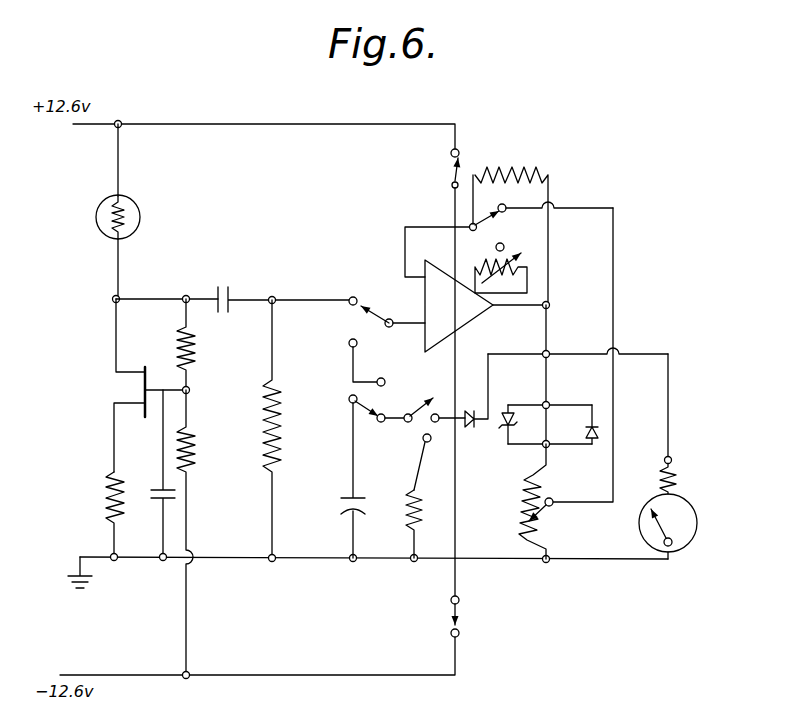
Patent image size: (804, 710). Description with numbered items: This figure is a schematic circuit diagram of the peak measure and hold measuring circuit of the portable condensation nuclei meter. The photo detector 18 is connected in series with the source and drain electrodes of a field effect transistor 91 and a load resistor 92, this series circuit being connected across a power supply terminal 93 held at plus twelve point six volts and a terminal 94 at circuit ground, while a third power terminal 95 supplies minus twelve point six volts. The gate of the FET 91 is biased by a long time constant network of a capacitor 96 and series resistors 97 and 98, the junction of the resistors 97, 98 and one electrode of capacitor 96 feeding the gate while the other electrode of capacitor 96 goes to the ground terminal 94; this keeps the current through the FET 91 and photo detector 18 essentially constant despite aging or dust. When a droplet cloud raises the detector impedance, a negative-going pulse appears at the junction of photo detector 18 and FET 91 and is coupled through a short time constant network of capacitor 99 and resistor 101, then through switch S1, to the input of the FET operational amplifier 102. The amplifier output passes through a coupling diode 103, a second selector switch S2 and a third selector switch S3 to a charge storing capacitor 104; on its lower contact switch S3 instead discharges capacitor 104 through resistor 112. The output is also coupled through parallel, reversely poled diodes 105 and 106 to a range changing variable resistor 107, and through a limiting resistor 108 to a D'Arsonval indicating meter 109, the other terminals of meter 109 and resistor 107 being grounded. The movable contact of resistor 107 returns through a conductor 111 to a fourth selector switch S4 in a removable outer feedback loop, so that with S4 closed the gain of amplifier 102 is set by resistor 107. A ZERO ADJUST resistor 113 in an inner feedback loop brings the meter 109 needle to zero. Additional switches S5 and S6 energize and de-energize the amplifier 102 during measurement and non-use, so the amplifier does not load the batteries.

The photo detector 18 is at (97, 215).
The field effect transistor 91 is at (142, 375).
The load resistor 92 is at (104, 498).
The power supply terminal 93 is at (144, 124).
The power supply terminal 94 is at (131, 566).
The power terminal 95 is at (283, 675).
The capacitor 96 is at (158, 491).
The resistor 97 is at (196, 352).
The resistor 98 is at (196, 446).
The capacitor 99 is at (234, 293).
The resistor 101 is at (283, 414).
The FET operational amplifier 102 is at (424, 294).
The coupling diode 103 is at (471, 407).
The charge storing capacitor 104 is at (342, 497).
The diode 105 is at (512, 425).
The diode 106 is at (589, 418).
The range changing variable resistor 107 is at (512, 501).
The limiting resistor 108 is at (681, 474).
The indicating meter 109 is at (697, 529).
The conductor 111 is at (613, 231).
The resistor 112 is at (408, 493).
The ZERO ADJUST resistor 113 is at (512, 272).
The switch S1 is at (387, 341).
The second selector switch S2 is at (376, 406).
The third selector switch S3 is at (427, 444).
The fourth selector switch S4 is at (542, 236).
The switch contact S5 is at (443, 374).
The switch contact S6 is at (459, 614).